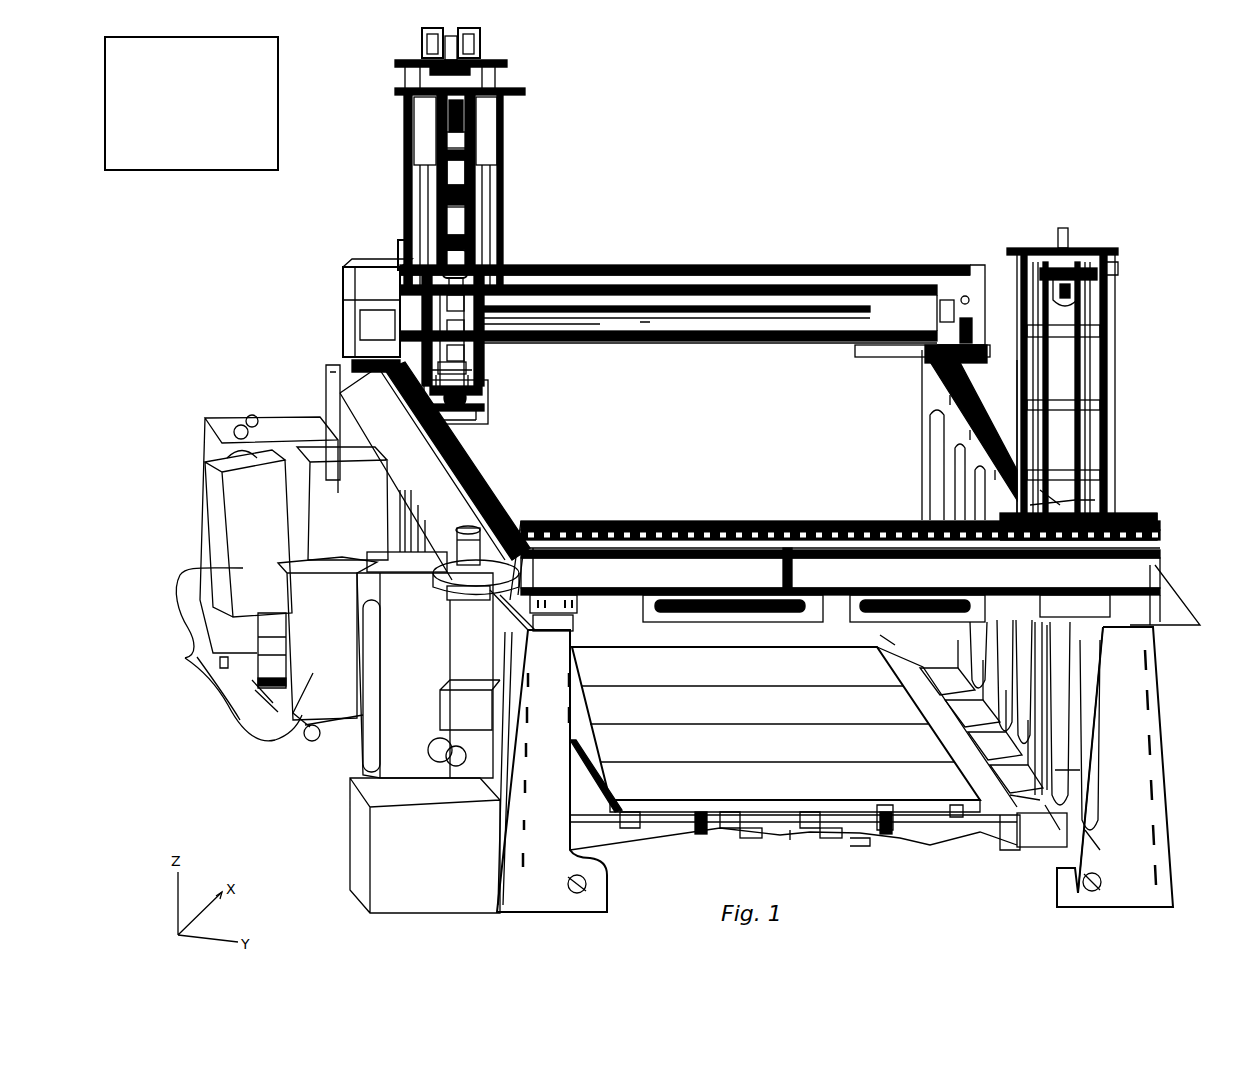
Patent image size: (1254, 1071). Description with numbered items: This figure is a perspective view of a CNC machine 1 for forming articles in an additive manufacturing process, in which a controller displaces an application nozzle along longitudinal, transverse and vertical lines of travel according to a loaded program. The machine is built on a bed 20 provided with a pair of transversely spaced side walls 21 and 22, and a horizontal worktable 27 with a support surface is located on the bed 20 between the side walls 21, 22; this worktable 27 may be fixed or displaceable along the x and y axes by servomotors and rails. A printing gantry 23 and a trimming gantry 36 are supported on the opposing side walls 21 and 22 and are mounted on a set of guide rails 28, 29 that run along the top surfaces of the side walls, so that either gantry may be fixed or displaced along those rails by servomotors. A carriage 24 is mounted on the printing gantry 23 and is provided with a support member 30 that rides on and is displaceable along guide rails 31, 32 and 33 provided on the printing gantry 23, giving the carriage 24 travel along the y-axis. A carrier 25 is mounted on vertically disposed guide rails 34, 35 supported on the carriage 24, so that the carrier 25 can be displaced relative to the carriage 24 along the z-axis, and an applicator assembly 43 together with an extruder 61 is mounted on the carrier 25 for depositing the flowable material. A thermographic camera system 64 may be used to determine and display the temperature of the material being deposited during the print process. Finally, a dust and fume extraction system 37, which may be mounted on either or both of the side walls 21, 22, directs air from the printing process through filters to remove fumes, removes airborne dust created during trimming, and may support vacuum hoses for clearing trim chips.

The CNC machine 1 is at (1098, 157).
The bed 20 is at (726, 826).
The side wall 21 is at (565, 749).
The side wall 22 is at (1153, 770).
The printing gantry 23 is at (918, 262).
The carriage 24 is at (402, 225).
The carrier 25 is at (500, 157).
The horizontal worktable 27 is at (746, 728).
The guide rail 28 is at (493, 500).
The guide rail 29 is at (946, 390).
The support member 30 is at (398, 250).
The guide rail 31 is at (770, 265).
The guide rail 32 is at (700, 275).
The guide rail 33 is at (727, 341).
The guide rail 34 is at (455, 410).
The guide rail 35 is at (470, 345).
The trimming gantry 36 is at (1115, 528).
The dust and fume extraction system 37 is at (188, 658).
The applicator assembly 43 is at (468, 424).
The extruder 61 is at (465, 270).
The thermographic camera system 64 is at (278, 98).